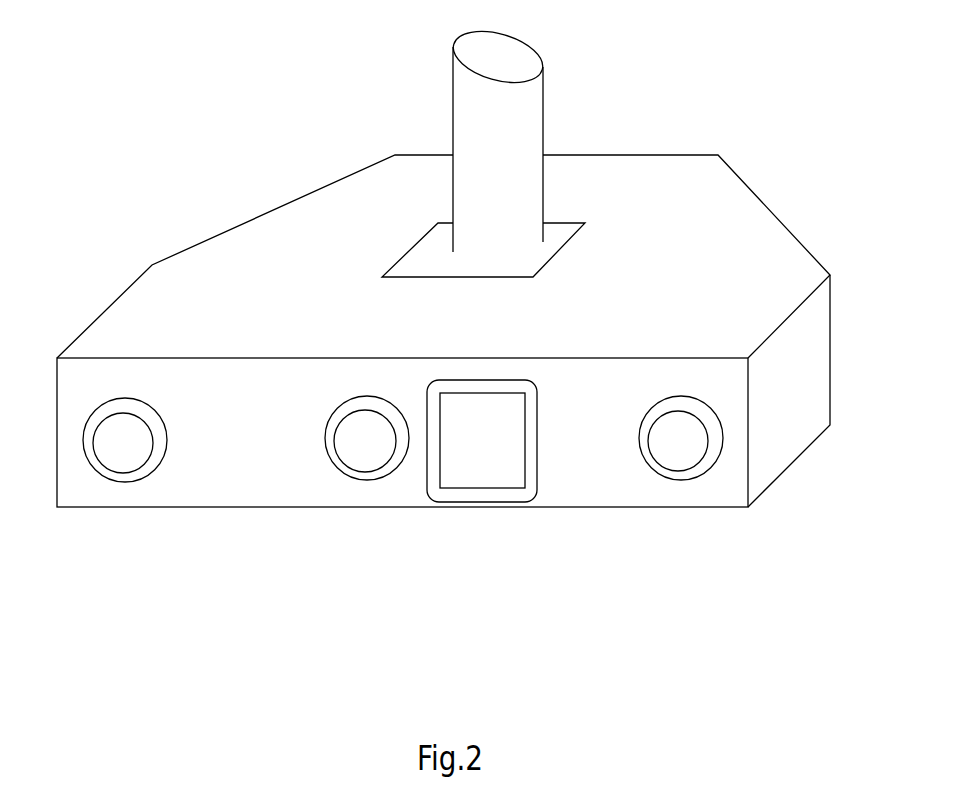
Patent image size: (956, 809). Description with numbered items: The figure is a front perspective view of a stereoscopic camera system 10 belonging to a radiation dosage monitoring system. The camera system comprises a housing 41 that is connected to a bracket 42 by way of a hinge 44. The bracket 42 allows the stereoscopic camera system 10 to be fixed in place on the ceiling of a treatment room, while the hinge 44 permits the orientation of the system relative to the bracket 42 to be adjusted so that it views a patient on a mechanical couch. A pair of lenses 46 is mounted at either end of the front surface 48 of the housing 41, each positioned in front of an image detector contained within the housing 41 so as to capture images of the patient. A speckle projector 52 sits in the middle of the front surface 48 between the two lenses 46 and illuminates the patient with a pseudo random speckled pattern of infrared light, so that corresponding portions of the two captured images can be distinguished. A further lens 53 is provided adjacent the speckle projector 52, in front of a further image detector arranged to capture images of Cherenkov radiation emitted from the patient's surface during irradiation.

The stereoscopic camera system 10 is at (280, 147).
The housing 41 is at (765, 255).
The bracket 42 is at (533, 108).
The hinge 44 is at (558, 238).
The lenses 46 is at (160, 428).
The front surface 48 is at (562, 508).
The speckle projector 52 is at (513, 438).
The further lens 53 is at (328, 424).